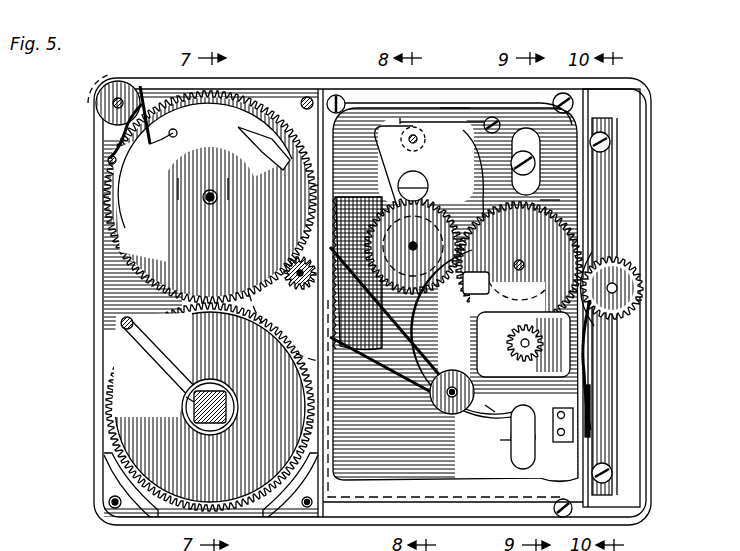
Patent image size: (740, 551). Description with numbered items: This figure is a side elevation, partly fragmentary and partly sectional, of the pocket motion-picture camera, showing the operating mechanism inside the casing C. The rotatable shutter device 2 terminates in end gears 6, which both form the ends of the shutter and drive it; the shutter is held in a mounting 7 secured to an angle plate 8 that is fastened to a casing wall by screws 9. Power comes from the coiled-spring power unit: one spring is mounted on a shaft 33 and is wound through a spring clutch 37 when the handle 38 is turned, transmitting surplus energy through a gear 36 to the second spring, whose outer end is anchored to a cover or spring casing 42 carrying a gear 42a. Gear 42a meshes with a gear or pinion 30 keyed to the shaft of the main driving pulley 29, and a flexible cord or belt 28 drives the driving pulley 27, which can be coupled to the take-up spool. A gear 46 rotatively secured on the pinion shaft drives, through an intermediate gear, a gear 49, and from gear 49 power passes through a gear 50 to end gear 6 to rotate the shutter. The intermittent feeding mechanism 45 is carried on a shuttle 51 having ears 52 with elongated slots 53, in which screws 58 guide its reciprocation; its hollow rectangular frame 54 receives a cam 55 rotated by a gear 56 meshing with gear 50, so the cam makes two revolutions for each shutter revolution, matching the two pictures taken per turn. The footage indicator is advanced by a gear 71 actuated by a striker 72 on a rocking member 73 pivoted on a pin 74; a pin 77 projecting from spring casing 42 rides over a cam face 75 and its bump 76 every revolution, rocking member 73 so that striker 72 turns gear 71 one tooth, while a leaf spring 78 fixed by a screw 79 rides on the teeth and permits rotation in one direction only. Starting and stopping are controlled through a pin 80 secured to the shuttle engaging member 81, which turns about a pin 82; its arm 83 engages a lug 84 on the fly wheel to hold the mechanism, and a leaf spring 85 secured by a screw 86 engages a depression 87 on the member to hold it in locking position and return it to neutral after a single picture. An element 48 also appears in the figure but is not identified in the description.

The casing C is at (96, 242).
The shutter device 2 is at (642, 285).
The end gears 6 is at (604, 268).
The mounting 7 is at (641, 298).
The angle plate 8 is at (613, 200).
The screws 9 is at (611, 141).
The driving pulley 27 is at (438, 408).
The flexible cord or belt 28 is at (424, 345).
The main driving pulley 29 is at (293, 279).
The gear or pinion 30 is at (303, 288).
The shaft 33 is at (203, 394).
The gear 36 is at (160, 359).
The spring clutch 37 is at (190, 400).
The handle 38 is at (512, 156).
The cover or casing 42 is at (210, 197).
The gear 42a is at (192, 272).
The intermittent feeding mechanism 45 is at (592, 412).
The gear 46 is at (381, 207).
The rack 48 is at (357, 273).
The gear 49 is at (463, 284).
The gear 50 is at (519, 265).
The shuttle 51 is at (515, 353).
The ears 52 is at (540, 203).
The elongated slots 53 is at (535, 163).
The hollow rectangular frame 54 is at (512, 341).
The cam 55 is at (594, 392).
The gear 56 is at (588, 345).
The screws 58 is at (511, 445).
The gear 71 is at (126, 87).
The striker 72 is at (150, 134).
The rocking member 73 is at (264, 143).
The pin 74 is at (205, 165).
The cam face 75 is at (197, 140).
The raised element or bump 76 is at (227, 179).
The pin 77 is at (179, 179).
The leaf spring 78 is at (106, 136).
The screw 79 is at (110, 164).
The pin 80 is at (377, 138).
The shuttle engaging member 81 is at (455, 292).
The pin 82 is at (409, 150).
The arm 83 is at (458, 334).
The lug 84 is at (481, 421).
The leaf spring 85 is at (460, 106).
The screw 86 is at (486, 130).
The depression 87 is at (398, 118).